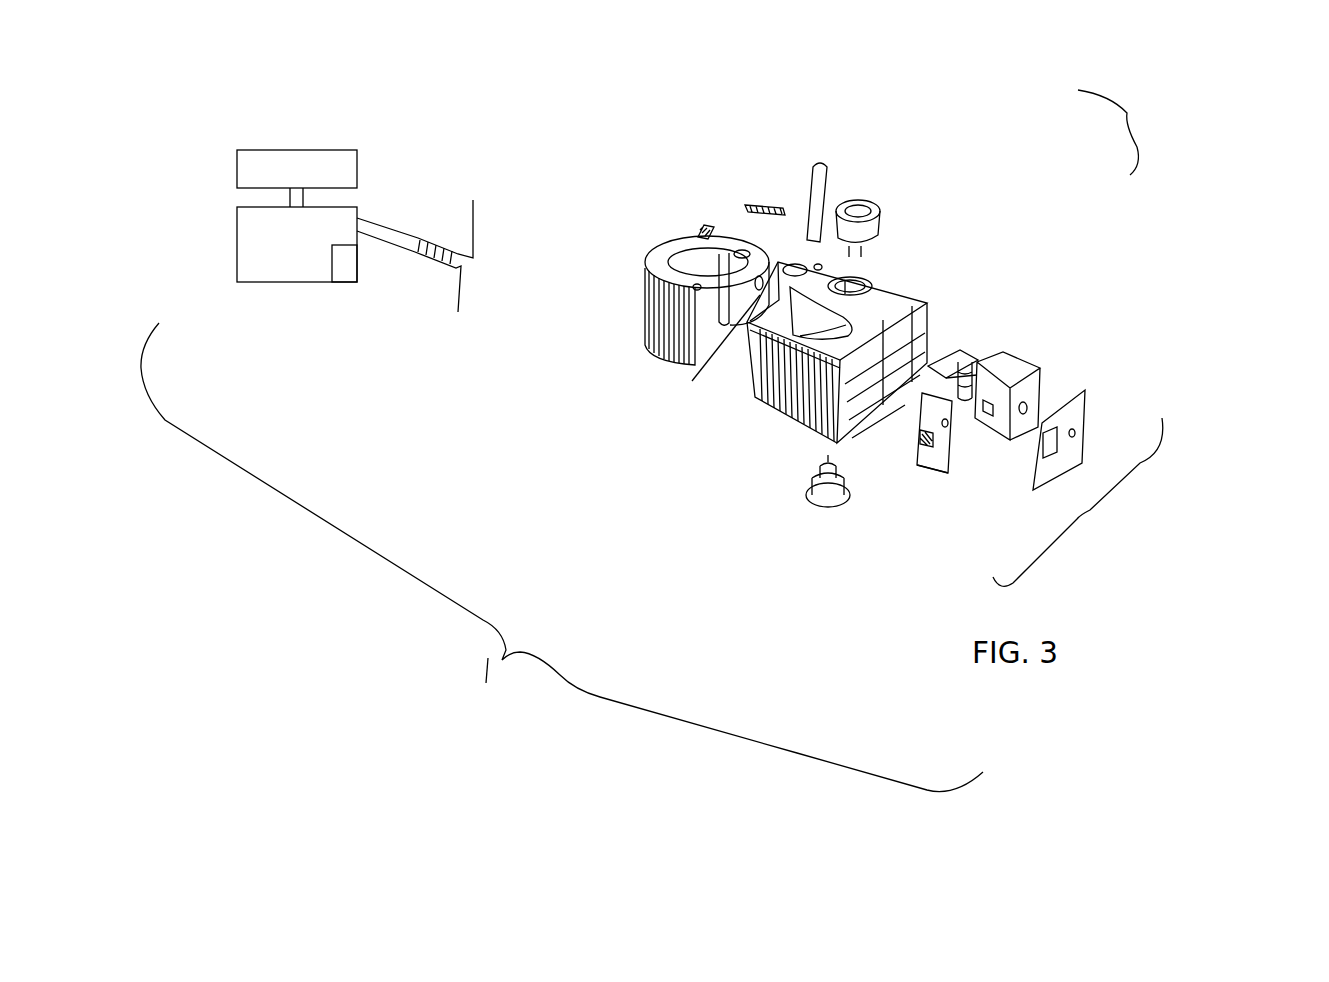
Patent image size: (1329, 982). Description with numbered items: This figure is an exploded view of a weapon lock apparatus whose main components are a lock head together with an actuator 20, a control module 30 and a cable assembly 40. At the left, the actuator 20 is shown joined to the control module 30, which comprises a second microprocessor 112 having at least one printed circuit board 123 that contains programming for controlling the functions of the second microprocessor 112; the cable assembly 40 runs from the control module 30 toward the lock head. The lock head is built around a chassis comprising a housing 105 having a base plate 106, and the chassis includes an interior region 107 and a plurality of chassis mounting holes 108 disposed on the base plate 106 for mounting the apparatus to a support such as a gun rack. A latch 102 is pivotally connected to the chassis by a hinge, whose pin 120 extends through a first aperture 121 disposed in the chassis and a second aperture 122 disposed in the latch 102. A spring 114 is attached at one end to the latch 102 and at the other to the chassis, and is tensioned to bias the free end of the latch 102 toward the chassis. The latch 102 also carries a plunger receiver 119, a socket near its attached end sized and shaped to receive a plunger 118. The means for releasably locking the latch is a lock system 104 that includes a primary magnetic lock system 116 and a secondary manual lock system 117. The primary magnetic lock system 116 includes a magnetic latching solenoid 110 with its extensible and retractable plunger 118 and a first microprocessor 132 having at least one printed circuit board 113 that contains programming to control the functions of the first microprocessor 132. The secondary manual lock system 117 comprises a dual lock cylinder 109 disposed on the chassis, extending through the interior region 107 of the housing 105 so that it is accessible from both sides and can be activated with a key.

The actuator 20 is at (237, 172).
The control module 30 is at (237, 240).
The cable assembly 40 is at (390, 222).
The latch 102 is at (582, 275).
The lock system 104 is at (1078, 502).
The housing 105 is at (926, 263).
The base plate 106 is at (1085, 415).
The interior region 107 is at (950, 345).
The chassis mounting holes 108 is at (787, 414).
The dual lock cylinder 109 is at (873, 205).
The magnetic latching solenoid 110 is at (1020, 365).
The second microprocessor 112 is at (382, 296).
The printed circuit board 113 is at (918, 475).
The spring 114 is at (743, 200).
The primary magnetic lock system 116 is at (977, 470).
The secondary manual lock system 117 is at (1130, 132).
The plunger 118 is at (960, 355).
The plunger receiver 119 is at (692, 381).
The pin 120 is at (837, 170).
The first aperture 121 is at (802, 262).
The second aperture 122 is at (740, 247).
The printed circuit board 123 is at (342, 263).
The first microprocessor 132 is at (891, 565).